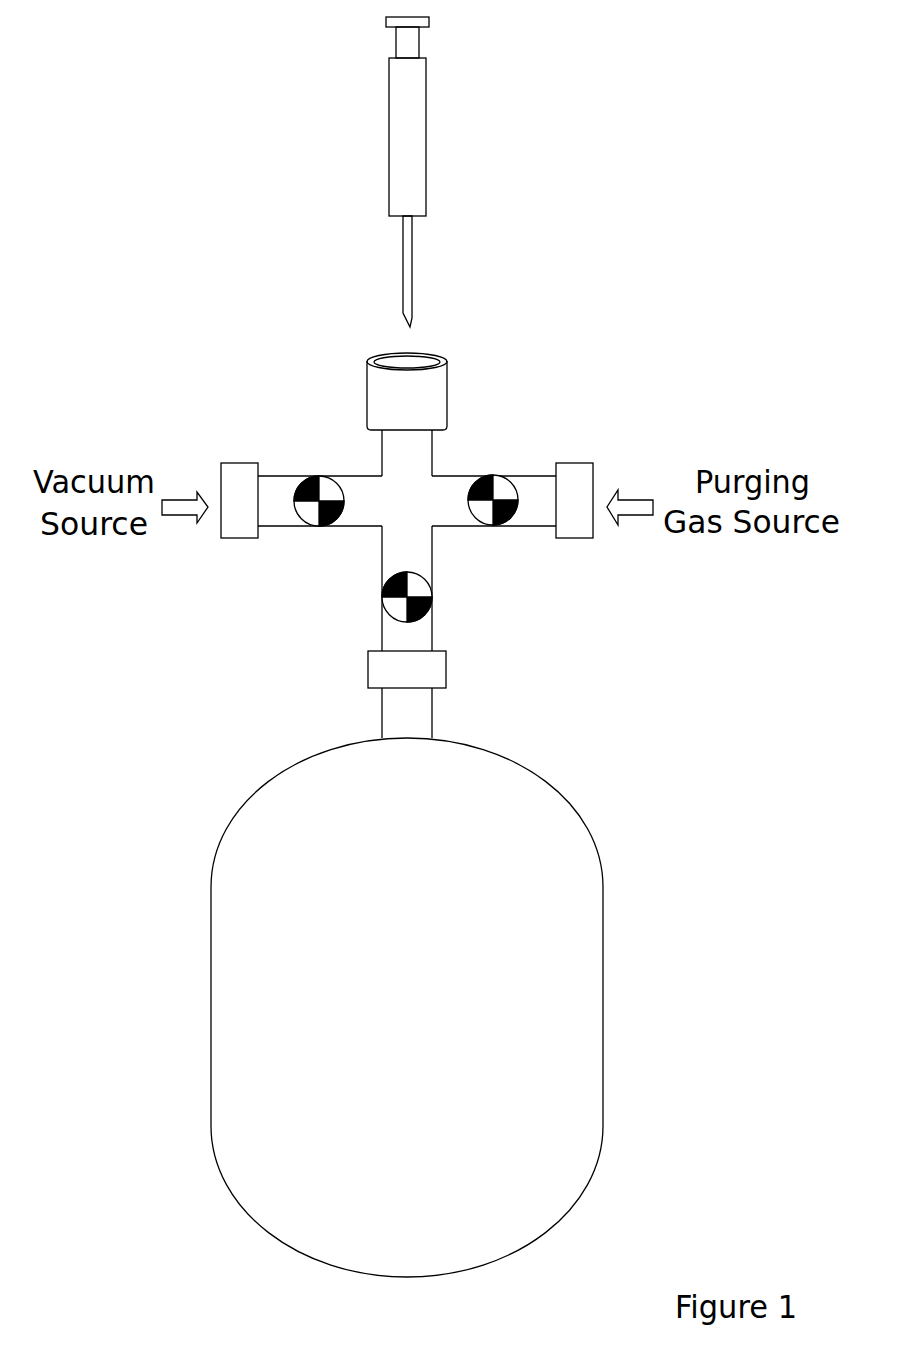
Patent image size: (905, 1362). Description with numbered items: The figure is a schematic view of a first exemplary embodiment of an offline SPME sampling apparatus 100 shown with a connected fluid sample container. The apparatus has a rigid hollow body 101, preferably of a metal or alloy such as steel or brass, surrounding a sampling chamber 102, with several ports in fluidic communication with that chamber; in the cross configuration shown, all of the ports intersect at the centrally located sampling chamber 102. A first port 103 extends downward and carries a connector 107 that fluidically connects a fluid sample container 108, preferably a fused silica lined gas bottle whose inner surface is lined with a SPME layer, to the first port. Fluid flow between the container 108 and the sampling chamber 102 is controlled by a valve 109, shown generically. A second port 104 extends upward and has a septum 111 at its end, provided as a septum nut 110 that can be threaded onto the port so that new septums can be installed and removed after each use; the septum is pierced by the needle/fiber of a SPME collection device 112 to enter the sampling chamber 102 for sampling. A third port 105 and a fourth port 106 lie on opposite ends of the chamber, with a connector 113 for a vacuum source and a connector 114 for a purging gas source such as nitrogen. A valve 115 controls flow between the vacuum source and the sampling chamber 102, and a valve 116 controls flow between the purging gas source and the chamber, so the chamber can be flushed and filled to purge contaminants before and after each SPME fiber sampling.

The offline SPME sampling apparatus 100 is at (600, 328).
The rigid hollow body 101 is at (463, 445).
The sampling chamber 102 is at (425, 512).
The first port 103 is at (432, 555).
The second port 104 is at (382, 447).
The third port 105 is at (277, 527).
The fourth port 106 is at (530, 526).
The connector 107 is at (447, 662).
The fluid sample container 108 is at (537, 770).
The valve 109 is at (380, 597).
The septum nut 110 is at (367, 383).
The septum 111 is at (418, 360).
The SPME collection device 112 is at (426, 140).
The connector 113 is at (238, 463).
The connector 114 is at (577, 463).
The valve 115 is at (319, 476).
The valve 116 is at (493, 475).